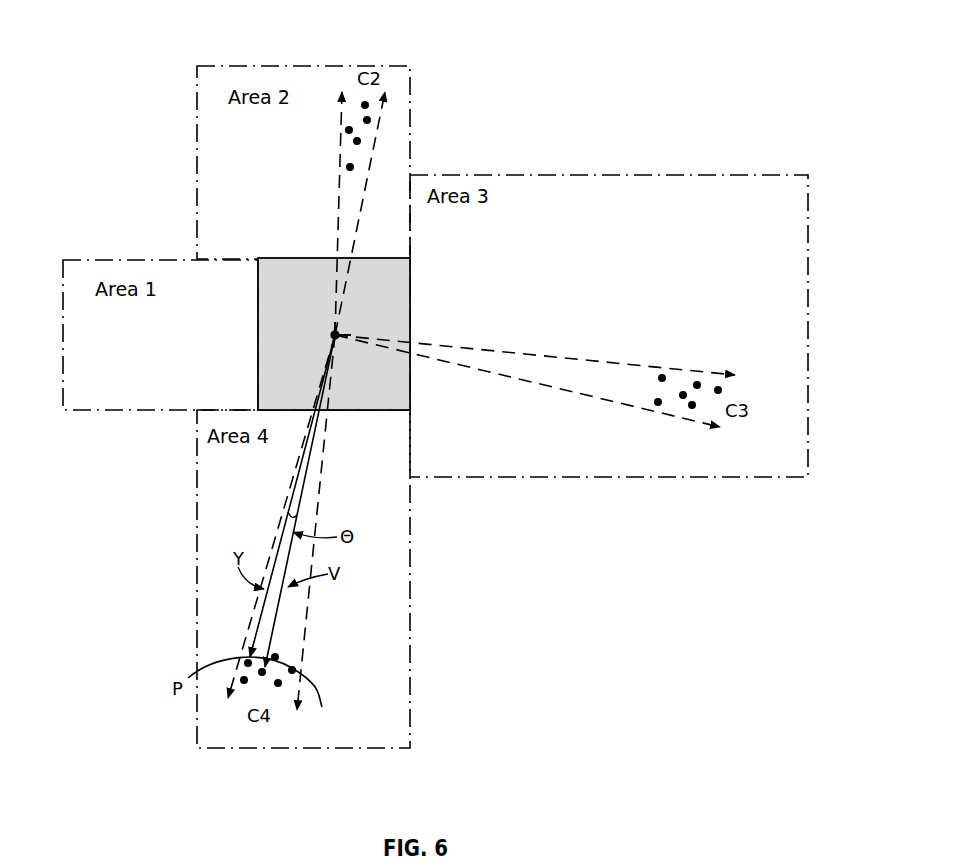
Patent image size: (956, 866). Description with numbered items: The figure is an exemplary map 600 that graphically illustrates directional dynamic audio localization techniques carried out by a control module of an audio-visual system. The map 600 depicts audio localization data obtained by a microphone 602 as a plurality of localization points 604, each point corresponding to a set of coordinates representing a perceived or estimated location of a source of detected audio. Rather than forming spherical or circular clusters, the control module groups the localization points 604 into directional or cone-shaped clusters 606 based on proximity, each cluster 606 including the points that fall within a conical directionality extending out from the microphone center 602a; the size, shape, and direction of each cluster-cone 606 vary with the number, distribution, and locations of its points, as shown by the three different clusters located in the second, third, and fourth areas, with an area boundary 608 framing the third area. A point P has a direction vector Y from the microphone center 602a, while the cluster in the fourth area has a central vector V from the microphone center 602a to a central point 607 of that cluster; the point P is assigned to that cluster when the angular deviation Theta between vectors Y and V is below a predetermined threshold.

The map 600 is at (488, 26).
The microphone 602 is at (334, 334).
The microphone center 602a is at (341, 346).
The localization points 604 is at (658, 400).
The clusters 606 is at (334, 156).
The central point 607 is at (268, 695).
The area boundary 608 is at (683, 175).